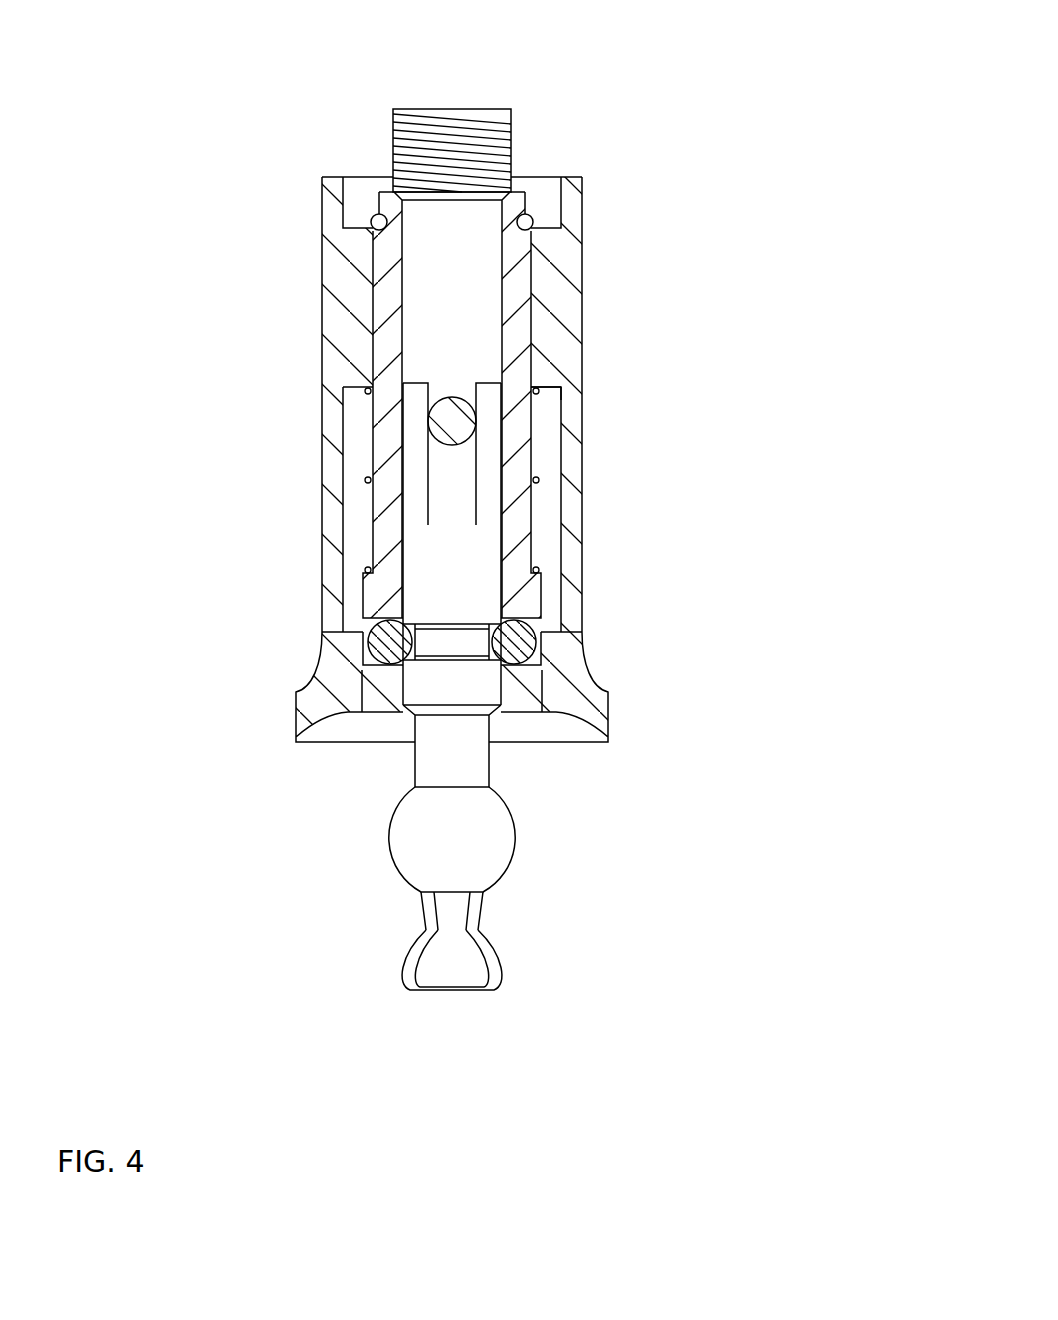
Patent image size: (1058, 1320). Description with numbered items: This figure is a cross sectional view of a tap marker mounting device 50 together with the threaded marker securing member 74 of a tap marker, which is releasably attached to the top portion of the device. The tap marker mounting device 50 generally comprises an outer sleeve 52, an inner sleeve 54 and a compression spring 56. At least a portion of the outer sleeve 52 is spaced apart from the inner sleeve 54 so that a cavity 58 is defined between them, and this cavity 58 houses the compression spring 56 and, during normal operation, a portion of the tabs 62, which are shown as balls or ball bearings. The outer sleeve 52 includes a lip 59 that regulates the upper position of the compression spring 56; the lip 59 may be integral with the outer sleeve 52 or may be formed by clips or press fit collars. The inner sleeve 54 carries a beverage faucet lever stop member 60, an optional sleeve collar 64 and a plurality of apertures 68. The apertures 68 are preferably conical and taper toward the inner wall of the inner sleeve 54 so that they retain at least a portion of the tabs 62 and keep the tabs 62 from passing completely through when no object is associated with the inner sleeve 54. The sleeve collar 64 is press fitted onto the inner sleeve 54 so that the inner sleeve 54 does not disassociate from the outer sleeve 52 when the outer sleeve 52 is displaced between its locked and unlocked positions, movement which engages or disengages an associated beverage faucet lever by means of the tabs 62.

The tap marker mounting device 50 is at (707, 245).
The outer sleeve 52 is at (584, 427).
The inner sleeve 54 is at (531, 530).
The compression spring 56 is at (367, 478).
The cavity 58 is at (352, 500).
The lip 59 is at (561, 378).
The beverage faucet lever stop member 60 is at (460, 402).
The tabs 62 is at (541, 637).
The sleeve collar 64 is at (362, 587).
The apertures 68 is at (367, 640).
The marker securing member 74 is at (393, 121).